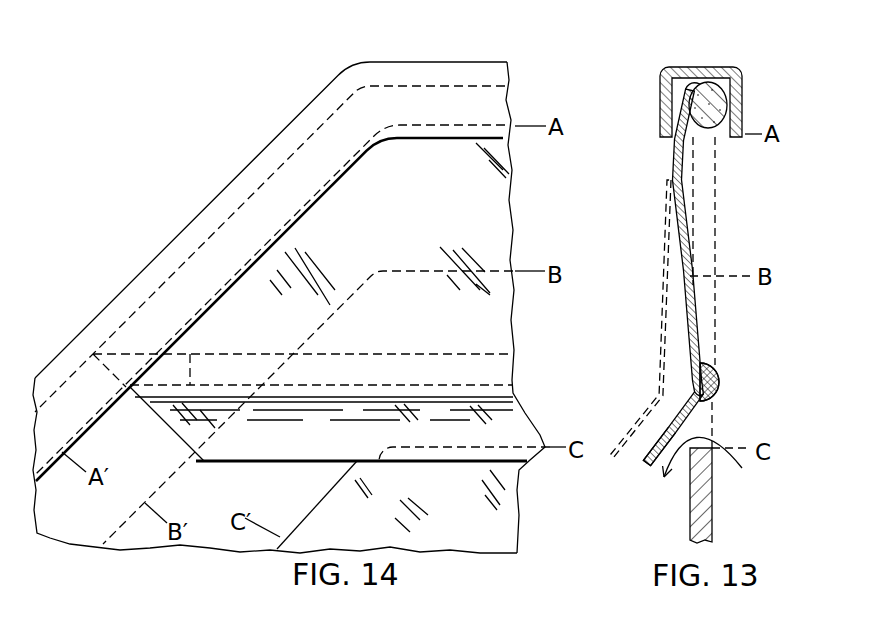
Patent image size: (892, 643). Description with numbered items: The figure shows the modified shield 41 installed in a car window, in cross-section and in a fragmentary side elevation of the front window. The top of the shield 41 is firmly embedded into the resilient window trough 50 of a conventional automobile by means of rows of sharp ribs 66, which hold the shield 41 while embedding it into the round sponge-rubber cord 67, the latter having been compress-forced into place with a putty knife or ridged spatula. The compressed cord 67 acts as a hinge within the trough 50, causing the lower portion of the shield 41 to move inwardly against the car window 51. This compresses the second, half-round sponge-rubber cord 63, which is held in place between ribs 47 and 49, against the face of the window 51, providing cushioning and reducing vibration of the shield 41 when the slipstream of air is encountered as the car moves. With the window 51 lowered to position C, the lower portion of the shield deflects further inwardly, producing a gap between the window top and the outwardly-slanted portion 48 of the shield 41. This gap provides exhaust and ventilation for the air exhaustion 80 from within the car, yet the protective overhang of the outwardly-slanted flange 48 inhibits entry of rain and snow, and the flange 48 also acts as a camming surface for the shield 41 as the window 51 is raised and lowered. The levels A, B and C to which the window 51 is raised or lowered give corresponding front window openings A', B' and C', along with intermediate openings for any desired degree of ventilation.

In FIG. 14, the modified shield 41 is at (418, 462).
In FIG. 13, the modified shield 41 is at (689, 238).
In FIG. 13, the rib 47 is at (708, 398).
In FIG. 13, the outwardly-slanted flange 48 is at (690, 430).
In FIG. 13, the rib 49 is at (701, 360).
In FIG. 14, the window trough 50 is at (318, 128).
In FIG. 13, the window trough 50 is at (731, 67).
In FIG. 14, the car window 51 is at (466, 123).
In FIG. 13, the car window 51 is at (712, 500).
In FIG. 13, the sponge-rubber cord 63 is at (711, 368).
In FIG. 13, the sharp ribs 66 is at (703, 82).
In FIG. 13, the sponge-rubber cord 67 is at (716, 136).
In FIG. 13, the air exhaustion 80 is at (708, 467).